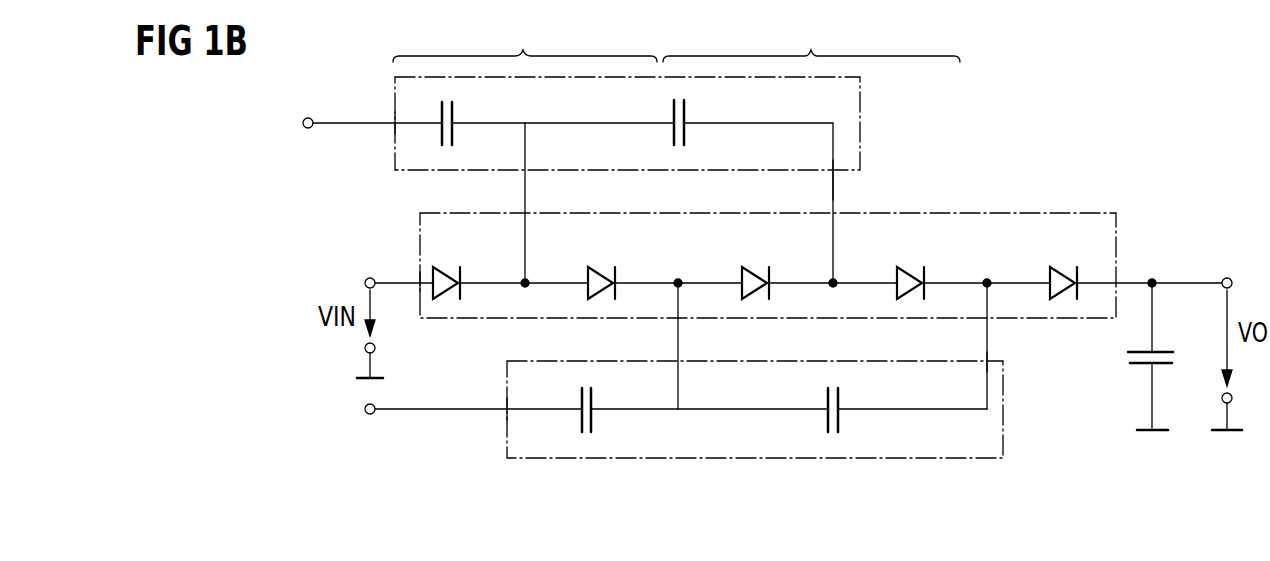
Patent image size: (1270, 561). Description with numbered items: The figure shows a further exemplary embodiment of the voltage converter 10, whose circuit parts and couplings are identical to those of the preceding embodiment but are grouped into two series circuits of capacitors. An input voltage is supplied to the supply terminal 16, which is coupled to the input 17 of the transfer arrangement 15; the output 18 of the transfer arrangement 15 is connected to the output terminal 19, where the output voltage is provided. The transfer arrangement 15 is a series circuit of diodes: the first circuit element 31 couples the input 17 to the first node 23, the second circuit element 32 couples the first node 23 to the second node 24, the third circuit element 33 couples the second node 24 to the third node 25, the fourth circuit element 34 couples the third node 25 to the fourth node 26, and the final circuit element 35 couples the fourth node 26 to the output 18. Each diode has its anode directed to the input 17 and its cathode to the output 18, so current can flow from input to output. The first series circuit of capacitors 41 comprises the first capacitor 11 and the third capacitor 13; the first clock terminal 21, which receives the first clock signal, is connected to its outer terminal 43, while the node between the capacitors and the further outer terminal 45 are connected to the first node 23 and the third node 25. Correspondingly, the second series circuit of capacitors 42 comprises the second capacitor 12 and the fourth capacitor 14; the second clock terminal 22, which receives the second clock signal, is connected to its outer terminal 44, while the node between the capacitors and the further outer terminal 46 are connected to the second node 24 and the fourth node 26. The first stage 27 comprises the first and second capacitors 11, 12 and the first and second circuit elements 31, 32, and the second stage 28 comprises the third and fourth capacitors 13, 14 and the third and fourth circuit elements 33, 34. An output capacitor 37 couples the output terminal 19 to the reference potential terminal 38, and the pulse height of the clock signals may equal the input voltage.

The voltage converter 10 is at (1185, 148).
The first capacitor 11 is at (455, 135).
The second capacitor 12 is at (594, 395).
The third capacitor 13 is at (687, 135).
The fourth capacitor 14 is at (841, 395).
The transfer arrangement 15 is at (981, 212).
The supply terminal 16 is at (370, 278).
The input of the transfer arrangement 17 is at (420, 280).
The output of the transfer arrangement 18 is at (1118, 280).
The output terminal 19 is at (1228, 278).
The first clock terminal 21 is at (308, 118).
The second clock terminal 22 is at (378, 406).
The first node 23 is at (528, 278).
The second node 24 is at (680, 278).
The third node 25 is at (836, 278).
The fourth node 26 is at (990, 278).
The first stage 27 is at (525, 39).
The second stage 28 is at (811, 39).
The first circuit element 31 is at (450, 275).
The second circuit element 32 is at (603, 275).
The third circuit element 33 is at (757, 275).
The fourth circuit element 34 is at (912, 275).
The final circuit element 35 is at (1065, 275).
The output capacitor 37 is at (1140, 367).
The reference potential terminal 38 is at (378, 375).
The first series circuit of capacitors 41 is at (862, 130).
The second series circuit of capacitors 42 is at (1005, 400).
The outer terminal of the first series circuit of capacitors 43 is at (395, 123).
The outer terminal of the second series circuit of capacitors 44 is at (507, 408).
The further outer terminal of the first series circuit of capacitors 45 is at (835, 170).
The further outer terminal of the second series circuit of capacitors 46 is at (989, 362).